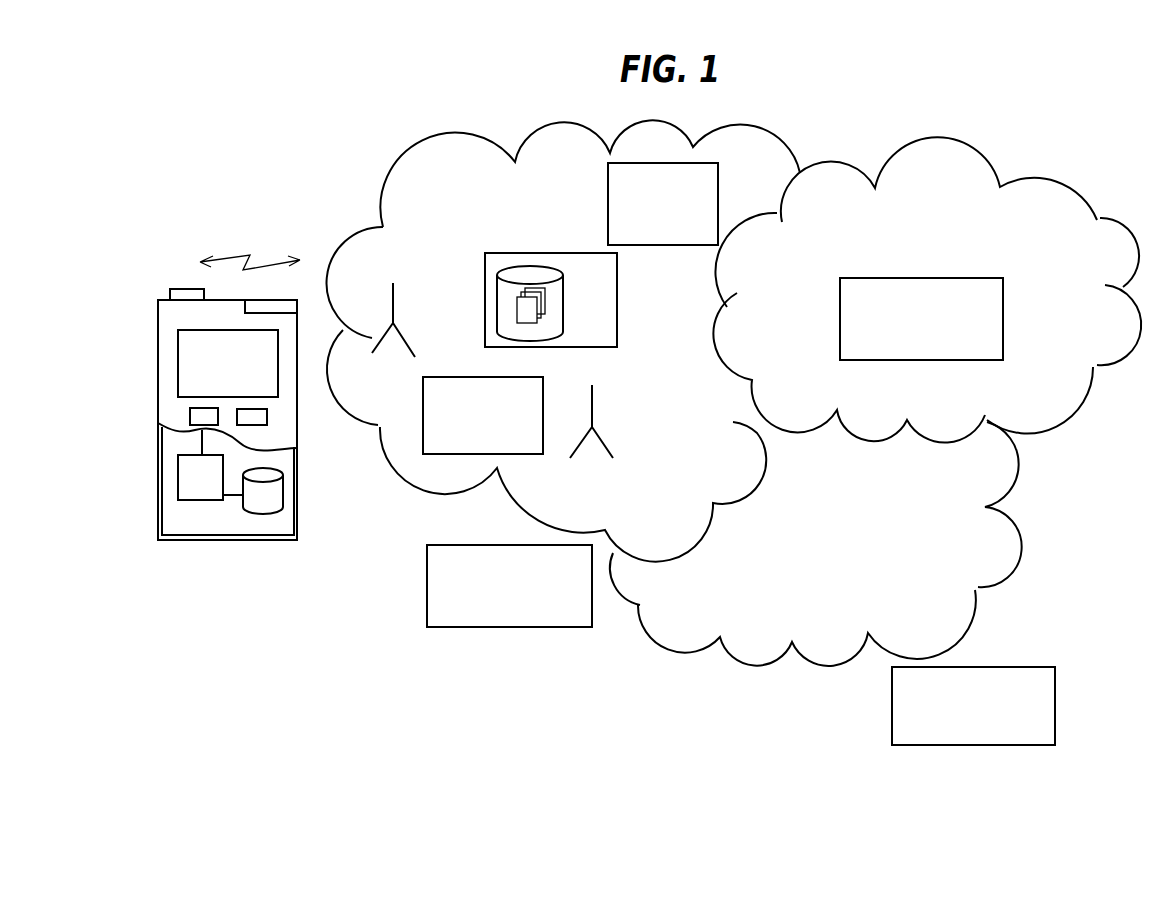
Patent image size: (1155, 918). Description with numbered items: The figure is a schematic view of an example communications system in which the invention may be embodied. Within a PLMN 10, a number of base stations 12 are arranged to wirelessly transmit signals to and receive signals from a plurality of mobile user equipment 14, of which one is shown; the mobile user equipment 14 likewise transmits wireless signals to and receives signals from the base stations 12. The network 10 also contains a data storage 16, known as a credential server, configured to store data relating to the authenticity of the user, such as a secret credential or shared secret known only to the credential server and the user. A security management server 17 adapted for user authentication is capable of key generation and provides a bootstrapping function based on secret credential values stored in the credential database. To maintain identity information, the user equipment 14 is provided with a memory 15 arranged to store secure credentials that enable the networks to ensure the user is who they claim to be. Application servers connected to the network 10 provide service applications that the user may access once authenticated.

The PLMN 10 is at (385, 190).
The base station 12 is at (395, 297).
The mobile user equipment 14 is at (196, 397).
The memory 15 is at (178, 482).
The data storage 16 is at (617, 302).
The security management server 17 is at (423, 455).